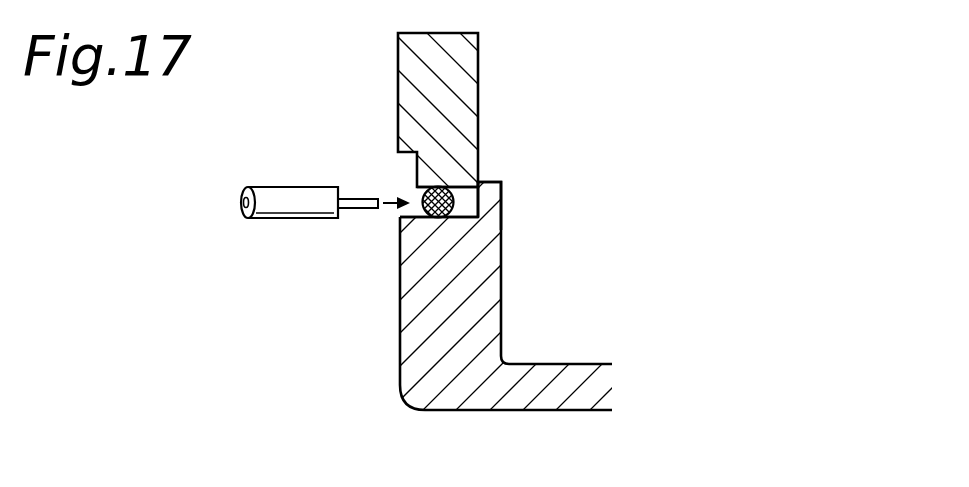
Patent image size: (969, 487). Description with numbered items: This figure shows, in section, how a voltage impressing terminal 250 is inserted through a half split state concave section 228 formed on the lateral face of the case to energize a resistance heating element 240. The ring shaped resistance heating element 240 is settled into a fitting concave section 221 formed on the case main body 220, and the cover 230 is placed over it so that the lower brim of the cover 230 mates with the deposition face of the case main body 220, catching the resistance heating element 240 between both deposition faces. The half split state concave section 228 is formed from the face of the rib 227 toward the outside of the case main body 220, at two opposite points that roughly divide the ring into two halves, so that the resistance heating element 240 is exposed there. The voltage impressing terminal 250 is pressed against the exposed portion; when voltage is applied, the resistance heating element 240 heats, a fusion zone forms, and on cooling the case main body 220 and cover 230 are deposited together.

The case main body 220 is at (473, 310).
The fitting concave section 221 is at (465, 216).
The rib 227 is at (490, 197).
The half split state concave section 228 is at (393, 215).
The cover 230 is at (460, 78).
The resistance heating element 240 is at (423, 196).
The voltage impressing terminal 250 is at (295, 208).